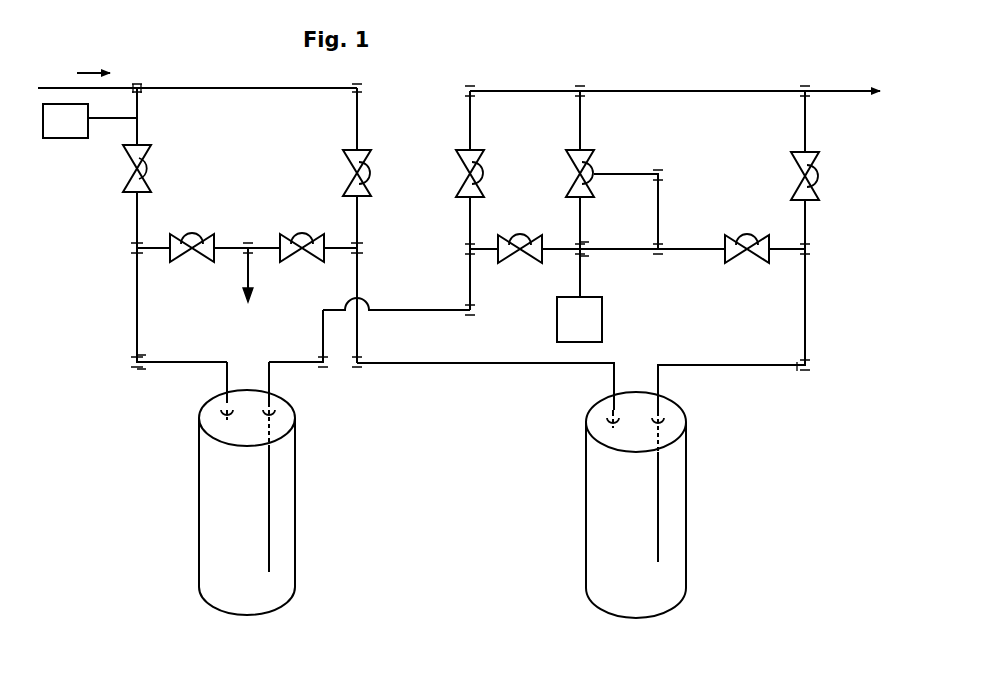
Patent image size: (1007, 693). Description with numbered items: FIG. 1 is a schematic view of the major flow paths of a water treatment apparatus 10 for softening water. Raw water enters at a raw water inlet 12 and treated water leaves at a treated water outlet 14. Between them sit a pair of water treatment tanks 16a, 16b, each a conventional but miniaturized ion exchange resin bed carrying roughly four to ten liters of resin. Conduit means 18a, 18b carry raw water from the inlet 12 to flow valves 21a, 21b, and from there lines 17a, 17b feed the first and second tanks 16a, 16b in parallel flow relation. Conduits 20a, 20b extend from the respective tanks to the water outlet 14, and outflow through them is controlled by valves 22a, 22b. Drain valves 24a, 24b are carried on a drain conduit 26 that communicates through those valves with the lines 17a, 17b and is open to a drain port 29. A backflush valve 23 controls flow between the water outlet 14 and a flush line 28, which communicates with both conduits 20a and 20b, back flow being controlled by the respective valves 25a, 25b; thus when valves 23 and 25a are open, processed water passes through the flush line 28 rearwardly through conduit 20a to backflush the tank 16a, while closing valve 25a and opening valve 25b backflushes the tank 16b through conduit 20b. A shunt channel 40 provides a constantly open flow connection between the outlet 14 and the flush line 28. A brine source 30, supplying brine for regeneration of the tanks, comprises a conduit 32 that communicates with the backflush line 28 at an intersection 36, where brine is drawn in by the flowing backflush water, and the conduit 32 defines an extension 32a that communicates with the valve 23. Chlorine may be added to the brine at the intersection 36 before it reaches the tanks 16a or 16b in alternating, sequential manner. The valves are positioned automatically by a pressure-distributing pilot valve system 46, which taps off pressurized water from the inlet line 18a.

The system 10 is at (166, 576).
The raw water inlet 12 is at (68, 86).
The treated water outlet 14 is at (512, 91).
The first water treatment tank 16a is at (250, 525).
The second water treatment tank 16b is at (638, 522).
The first line 17a is at (137, 312).
The second line 17b is at (357, 328).
The first conduit means 18a is at (138, 130).
The second conduit means 18b is at (357, 122).
The first outlet conduit 20a is at (307, 364).
The second outlet conduit 20b is at (805, 331).
The first flow valve 21a is at (152, 164).
The second flow valve 21b is at (372, 168).
The first outflow valve 22a is at (484, 170).
The second outflow valve 22b is at (818, 180).
The backflush valve 23 is at (594, 168).
The first drain valve 24a is at (205, 199).
The second drain valve 24b is at (302, 233).
The first backflow valve 25a is at (522, 240).
The second backflow valve 25b is at (750, 264).
The drain conduit 26 is at (226, 258).
The flush line 28 is at (627, 252).
The drain port 29 is at (252, 268).
The brine source 30 is at (594, 334).
The brine conduit 32 is at (580, 278).
The line extension 32a is at (580, 218).
The intersection 36 is at (584, 248).
The shunt channel 40 is at (646, 174).
The pilot valve system 46 is at (78, 131).